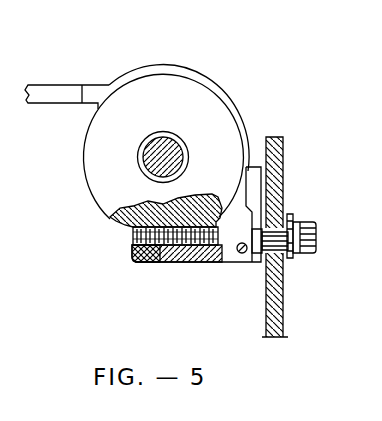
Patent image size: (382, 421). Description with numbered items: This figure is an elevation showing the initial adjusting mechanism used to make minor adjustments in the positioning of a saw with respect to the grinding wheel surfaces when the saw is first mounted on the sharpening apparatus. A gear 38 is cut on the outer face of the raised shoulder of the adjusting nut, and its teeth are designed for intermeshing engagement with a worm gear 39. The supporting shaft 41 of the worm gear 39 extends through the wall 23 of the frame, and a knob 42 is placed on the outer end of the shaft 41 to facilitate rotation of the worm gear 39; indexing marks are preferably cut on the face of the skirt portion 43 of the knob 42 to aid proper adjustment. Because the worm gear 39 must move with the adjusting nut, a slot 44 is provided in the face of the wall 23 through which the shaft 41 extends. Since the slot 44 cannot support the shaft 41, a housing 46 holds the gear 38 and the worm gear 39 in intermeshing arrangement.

The wall 23 is at (276, 311).
The gear 38 is at (123, 226).
The worm gear 39 is at (170, 246).
The supporting shaft 41 is at (273, 231).
The knob 42 is at (318, 237).
The skirt portion 43 is at (292, 222).
The slot 44 is at (289, 262).
The housing 46 is at (242, 255).